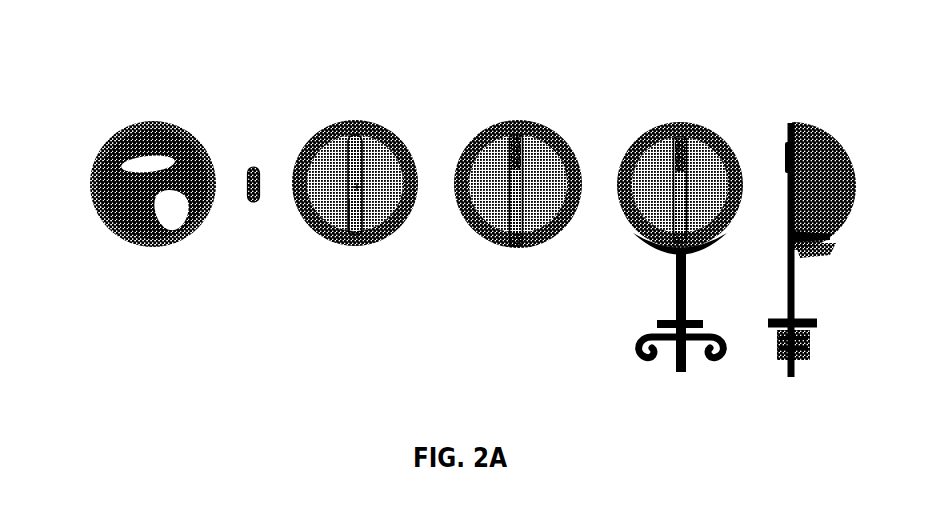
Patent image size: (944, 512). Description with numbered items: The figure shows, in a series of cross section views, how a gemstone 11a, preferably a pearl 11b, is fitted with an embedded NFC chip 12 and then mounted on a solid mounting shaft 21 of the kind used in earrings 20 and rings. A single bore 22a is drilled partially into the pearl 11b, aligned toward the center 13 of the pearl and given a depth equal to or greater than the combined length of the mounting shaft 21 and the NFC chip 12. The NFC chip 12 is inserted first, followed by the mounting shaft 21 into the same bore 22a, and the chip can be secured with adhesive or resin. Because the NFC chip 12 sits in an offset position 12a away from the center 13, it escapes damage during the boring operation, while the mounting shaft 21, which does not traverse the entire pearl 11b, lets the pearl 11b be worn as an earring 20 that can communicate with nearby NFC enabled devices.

The gemstone 11a is at (108, 117).
The pearl 11b is at (367, 176).
The NFC chip 12 is at (255, 158).
The center 13 is at (372, 197).
The bore 22a is at (348, 210).
The earring 20 is at (791, 190).
The offset position 12a is at (785, 157).
The mounting shaft 21 is at (785, 226).